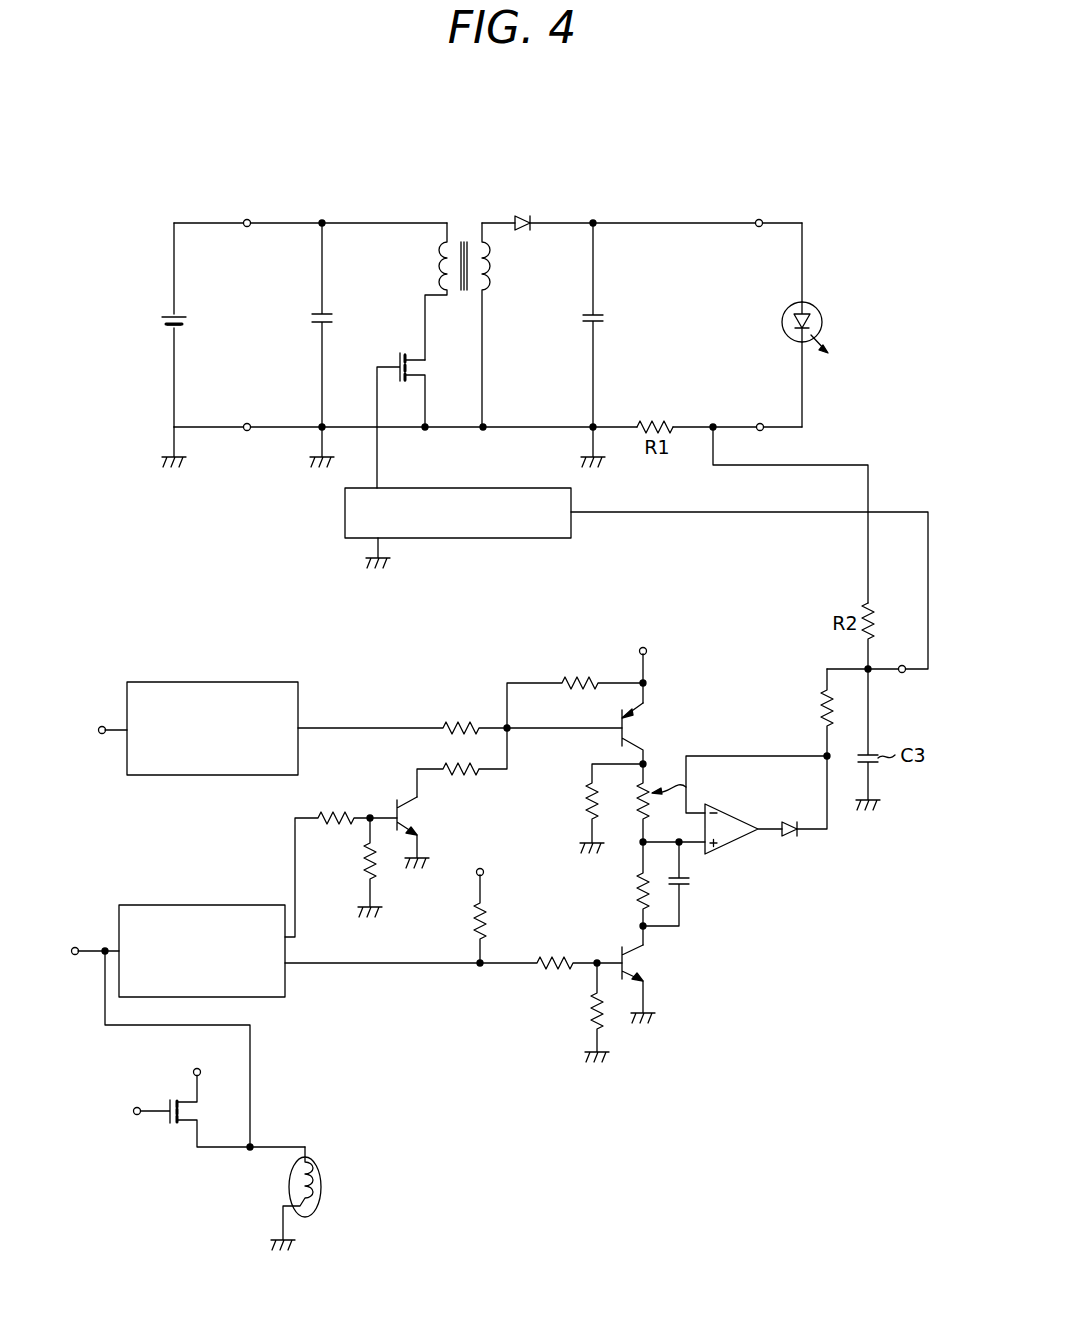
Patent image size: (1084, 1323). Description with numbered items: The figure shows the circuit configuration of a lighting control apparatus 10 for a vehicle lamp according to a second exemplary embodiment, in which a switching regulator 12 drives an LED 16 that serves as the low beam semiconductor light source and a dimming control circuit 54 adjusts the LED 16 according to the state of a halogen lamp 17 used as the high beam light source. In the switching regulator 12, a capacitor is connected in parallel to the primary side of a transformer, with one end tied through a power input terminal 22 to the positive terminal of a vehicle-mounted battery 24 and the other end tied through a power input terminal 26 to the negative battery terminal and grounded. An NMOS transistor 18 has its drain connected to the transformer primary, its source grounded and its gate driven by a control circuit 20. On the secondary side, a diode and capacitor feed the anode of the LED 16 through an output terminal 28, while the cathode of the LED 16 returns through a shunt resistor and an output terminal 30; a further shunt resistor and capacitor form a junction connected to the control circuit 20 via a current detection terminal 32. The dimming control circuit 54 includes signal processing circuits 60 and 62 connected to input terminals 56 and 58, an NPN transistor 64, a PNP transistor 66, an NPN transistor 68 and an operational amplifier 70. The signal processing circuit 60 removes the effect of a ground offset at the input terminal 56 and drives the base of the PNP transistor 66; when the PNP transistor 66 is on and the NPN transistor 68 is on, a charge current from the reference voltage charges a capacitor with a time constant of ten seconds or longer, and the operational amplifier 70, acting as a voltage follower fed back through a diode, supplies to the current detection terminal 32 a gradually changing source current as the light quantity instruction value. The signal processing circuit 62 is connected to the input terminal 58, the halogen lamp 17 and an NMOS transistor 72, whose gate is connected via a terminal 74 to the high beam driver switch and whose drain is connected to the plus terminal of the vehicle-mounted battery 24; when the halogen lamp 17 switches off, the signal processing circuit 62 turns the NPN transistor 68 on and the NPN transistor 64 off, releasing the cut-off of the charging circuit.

The lighting control apparatus 10 is at (507, 292).
The switching regulator 12 is at (279, 294).
The LED 16 is at (822, 322).
The halogen lamp 17 is at (322, 1185).
The NMOS transistor 18 is at (430, 367).
The control circuit 20 is at (418, 488).
The power input terminal 22 is at (247, 220).
The vehicle-mounted battery 24 is at (186, 320).
The power input terminal 26 is at (247, 423).
The output terminal 28 is at (759, 220).
The output terminal 30 is at (760, 424).
The current detection terminal 32 is at (902, 673).
The dimming control circuit 54 is at (582, 636).
The input terminal 56 is at (102, 726).
The input terminal 58 is at (75, 947).
The signal processing circuit 60 is at (213, 682).
The signal processing circuit 62 is at (202, 905).
The NPN transistor 64 is at (396, 798).
The PNP transistor 66 is at (645, 725).
The NPN transistor 68 is at (646, 960).
The operational amplifier 70 is at (741, 845).
The NMOS transistor 72 is at (170, 1099).
The terminal 74 is at (137, 1115).